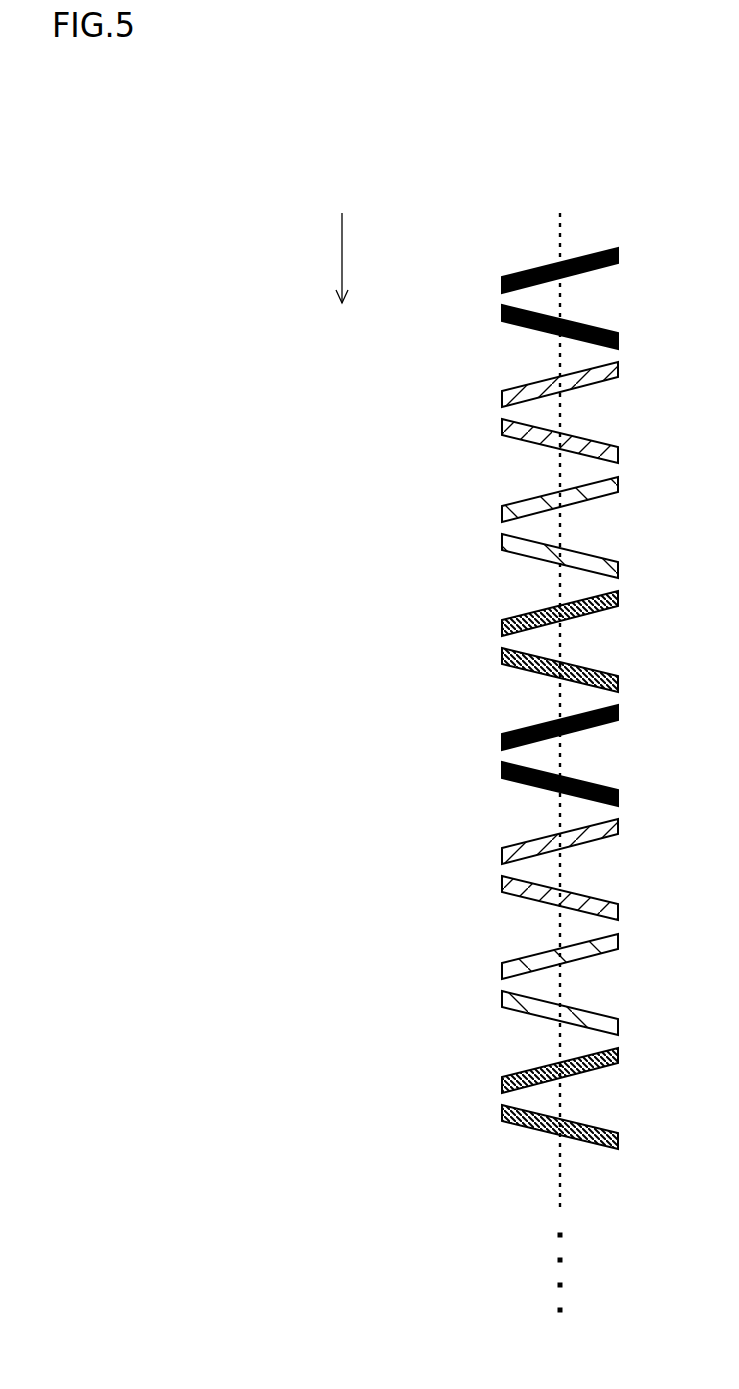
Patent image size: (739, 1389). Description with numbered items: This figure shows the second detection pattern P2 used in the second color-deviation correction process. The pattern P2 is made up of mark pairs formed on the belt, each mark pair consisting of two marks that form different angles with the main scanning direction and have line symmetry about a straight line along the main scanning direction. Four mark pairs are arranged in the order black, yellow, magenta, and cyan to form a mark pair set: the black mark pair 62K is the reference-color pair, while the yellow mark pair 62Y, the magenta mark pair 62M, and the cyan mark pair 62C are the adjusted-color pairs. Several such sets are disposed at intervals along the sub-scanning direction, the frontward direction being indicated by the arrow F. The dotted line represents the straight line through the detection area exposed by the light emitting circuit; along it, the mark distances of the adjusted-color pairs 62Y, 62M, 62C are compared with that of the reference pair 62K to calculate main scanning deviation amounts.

The black mark pair 62K is at (492, 259).
The yellow mark pair 62Y is at (492, 373).
The magenta mark pair 62M is at (492, 488).
The cyan mark pair 62C is at (492, 602).
The second detection pattern P2 is at (558, 197).
The frontward direction F is at (342, 278).